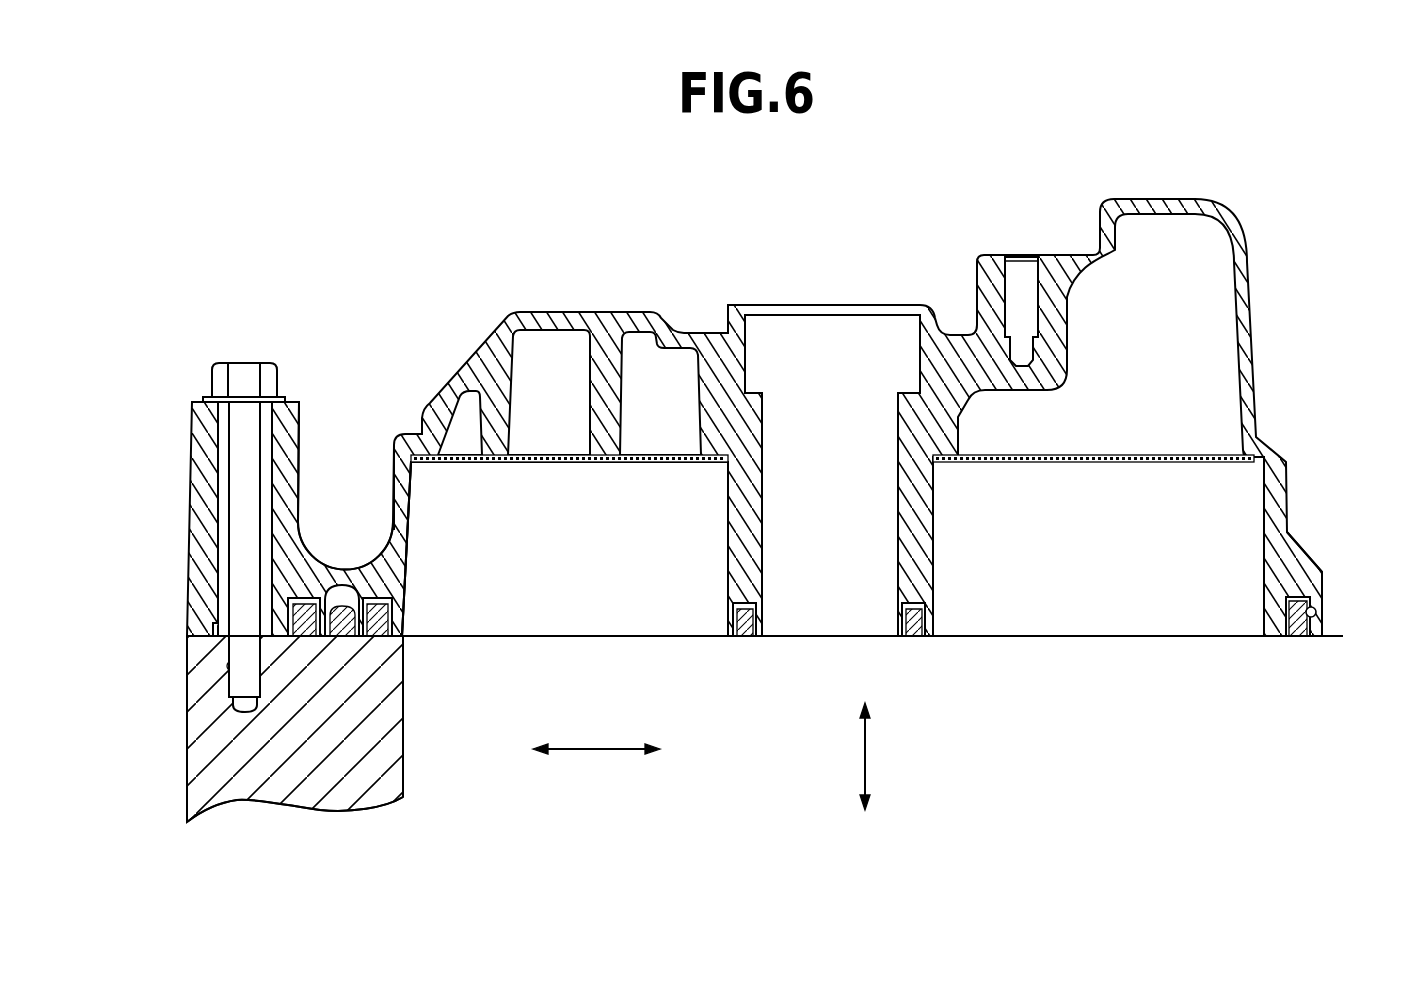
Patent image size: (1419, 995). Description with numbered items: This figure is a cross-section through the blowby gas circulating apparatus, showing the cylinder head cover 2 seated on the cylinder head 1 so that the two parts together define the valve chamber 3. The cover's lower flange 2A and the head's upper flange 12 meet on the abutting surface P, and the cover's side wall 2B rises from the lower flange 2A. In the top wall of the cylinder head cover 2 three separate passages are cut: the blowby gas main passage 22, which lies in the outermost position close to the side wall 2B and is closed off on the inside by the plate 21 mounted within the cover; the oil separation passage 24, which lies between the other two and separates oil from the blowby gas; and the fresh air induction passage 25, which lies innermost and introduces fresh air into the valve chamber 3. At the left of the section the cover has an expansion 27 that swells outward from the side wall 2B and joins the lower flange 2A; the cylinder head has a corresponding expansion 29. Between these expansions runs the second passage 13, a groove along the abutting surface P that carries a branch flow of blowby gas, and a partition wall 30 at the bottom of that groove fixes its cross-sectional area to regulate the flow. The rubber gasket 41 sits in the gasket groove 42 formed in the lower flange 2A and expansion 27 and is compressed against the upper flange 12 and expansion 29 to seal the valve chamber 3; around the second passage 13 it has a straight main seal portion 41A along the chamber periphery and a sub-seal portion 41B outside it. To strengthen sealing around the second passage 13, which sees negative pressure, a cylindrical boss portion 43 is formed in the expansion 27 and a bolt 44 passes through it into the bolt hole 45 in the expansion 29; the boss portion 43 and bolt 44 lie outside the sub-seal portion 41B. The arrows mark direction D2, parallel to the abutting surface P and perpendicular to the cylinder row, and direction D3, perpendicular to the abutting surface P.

The cylinder head 1 is at (291, 729).
The cylinder head cover 2 is at (763, 479).
The lower flange 2A is at (1300, 572).
The side wall 2B is at (400, 533).
The valve chamber 3 is at (683, 600).
The upper flange 12 is at (213, 630).
The second passage 13 is at (344, 628).
The plate 21 is at (572, 465).
The blowby gas main passage 22 is at (455, 418).
The oil separation passage 24 is at (557, 345).
The fresh air induction passage 25 is at (658, 355).
The expansion 27 is at (380, 558).
The expansion 29 is at (393, 782).
The partition wall 30 is at (370, 588).
The gasket 41 is at (1297, 640).
The main seal portion 41A is at (383, 630).
The sub-seal portion 41B is at (300, 628).
The gasket groove 42 is at (1316, 611).
The boss portion 43 is at (208, 519).
The bolt 44 is at (247, 370).
The bolt hole 45 is at (226, 666).
The abutting surface P is at (600, 638).
The direction D2 is at (593, 752).
The direction D3 is at (868, 755).